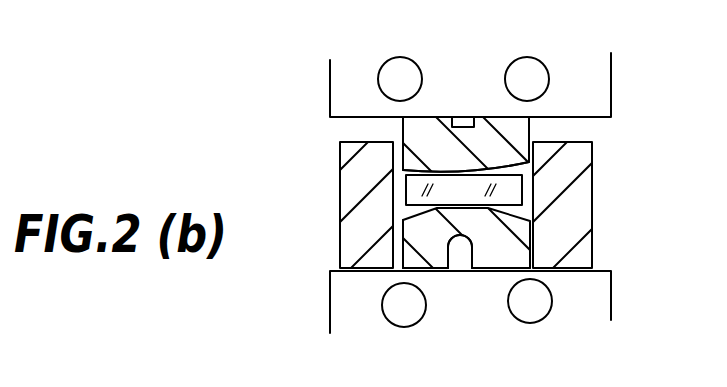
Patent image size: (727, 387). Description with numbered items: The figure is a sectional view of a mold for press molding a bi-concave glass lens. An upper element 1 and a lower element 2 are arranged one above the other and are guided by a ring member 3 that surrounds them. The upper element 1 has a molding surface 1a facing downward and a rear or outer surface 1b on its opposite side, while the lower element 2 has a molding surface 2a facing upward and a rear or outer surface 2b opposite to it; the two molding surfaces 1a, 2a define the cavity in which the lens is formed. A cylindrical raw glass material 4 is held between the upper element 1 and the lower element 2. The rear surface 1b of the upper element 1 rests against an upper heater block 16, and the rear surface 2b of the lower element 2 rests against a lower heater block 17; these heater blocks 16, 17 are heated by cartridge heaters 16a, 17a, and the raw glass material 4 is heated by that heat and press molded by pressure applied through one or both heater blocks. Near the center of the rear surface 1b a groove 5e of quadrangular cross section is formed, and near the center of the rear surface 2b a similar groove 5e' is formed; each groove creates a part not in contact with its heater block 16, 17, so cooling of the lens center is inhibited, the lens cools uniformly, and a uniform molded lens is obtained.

The upper heater block 16 is at (600, 90).
The cartridge heater 16a is at (380, 80).
The upper element 1 is at (517, 126).
The molding surface 1a is at (405, 170).
The rear surface 1b is at (428, 117).
The groove 5e is at (472, 70).
The raw glass material 4 is at (513, 184).
The ring member 3 is at (580, 205).
The lower element 2 is at (518, 229).
The molding surface 2a is at (400, 218).
The rear surface 2b is at (438, 271).
The groove 5e' is at (517, 301).
The lower heater block 17 is at (611, 293).
The cartridge heater 17a is at (383, 314).